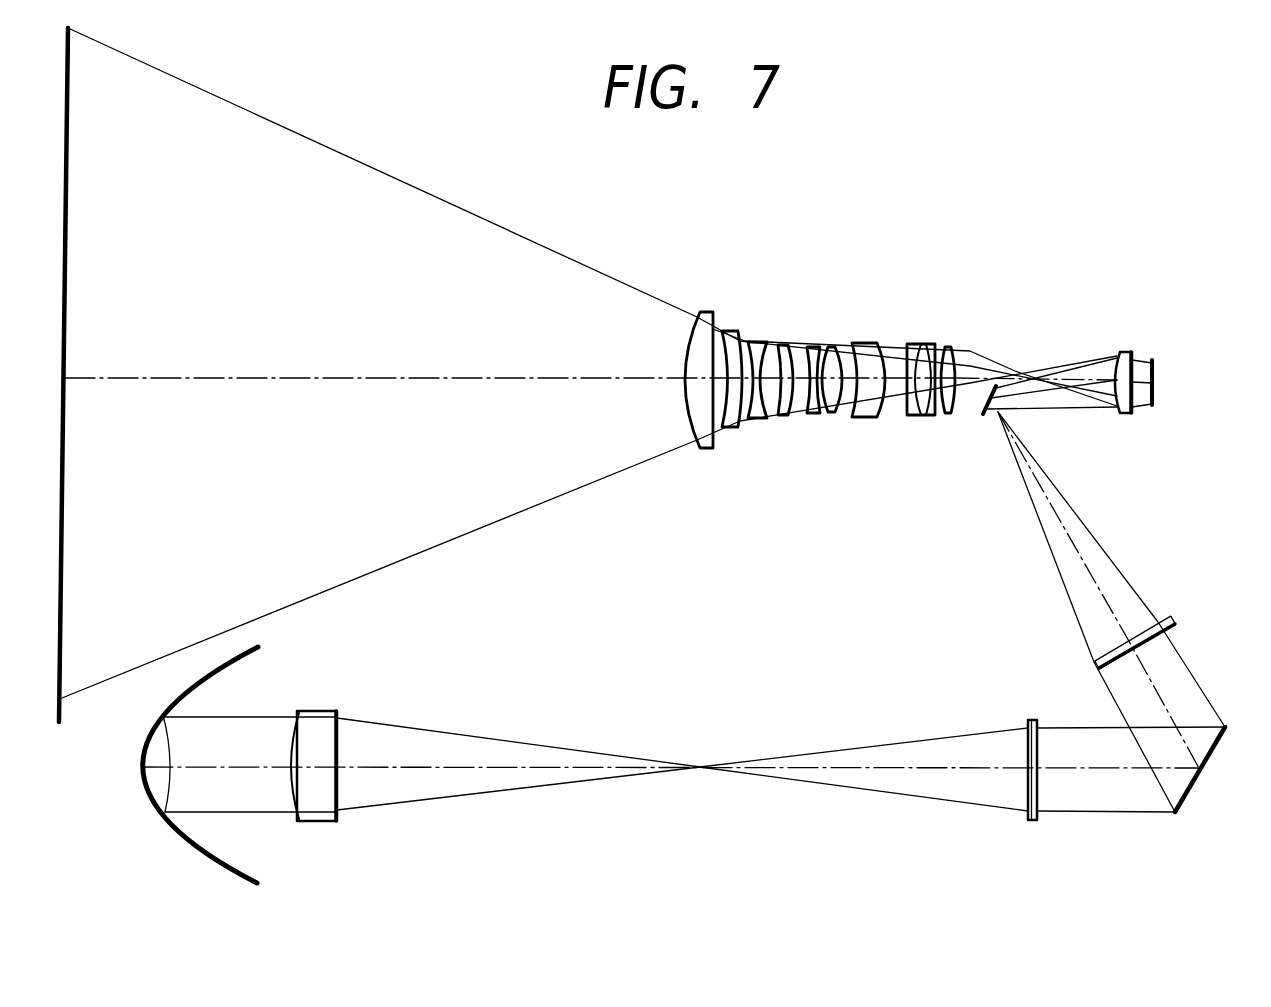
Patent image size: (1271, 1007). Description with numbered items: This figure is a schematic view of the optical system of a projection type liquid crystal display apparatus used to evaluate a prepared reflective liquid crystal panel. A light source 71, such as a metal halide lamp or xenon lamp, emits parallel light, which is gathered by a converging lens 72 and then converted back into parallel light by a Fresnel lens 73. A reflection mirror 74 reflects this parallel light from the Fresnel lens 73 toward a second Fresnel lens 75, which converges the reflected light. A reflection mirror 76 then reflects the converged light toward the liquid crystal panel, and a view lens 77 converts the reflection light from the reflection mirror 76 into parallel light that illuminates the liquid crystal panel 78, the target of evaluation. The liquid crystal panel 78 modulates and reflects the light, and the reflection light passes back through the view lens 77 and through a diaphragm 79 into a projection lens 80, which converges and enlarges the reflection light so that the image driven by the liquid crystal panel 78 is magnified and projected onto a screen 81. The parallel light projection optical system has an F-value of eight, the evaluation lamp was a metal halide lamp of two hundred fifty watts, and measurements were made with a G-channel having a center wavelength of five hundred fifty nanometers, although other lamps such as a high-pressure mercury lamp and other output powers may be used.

The light source 71 is at (240, 870).
The converging lens 72 is at (325, 711).
The Fresnel lens 73 is at (1032, 822).
The reflection mirror 74 is at (1190, 790).
The Fresnel lens 75 is at (1120, 645).
The reflection mirror 76 is at (983, 414).
The view lens 77 is at (1123, 416).
The liquid crystal panel 78 is at (1156, 360).
The diaphragm 79 is at (1007, 362).
The projection lens 80 is at (806, 324).
The screen 81 is at (66, 297).